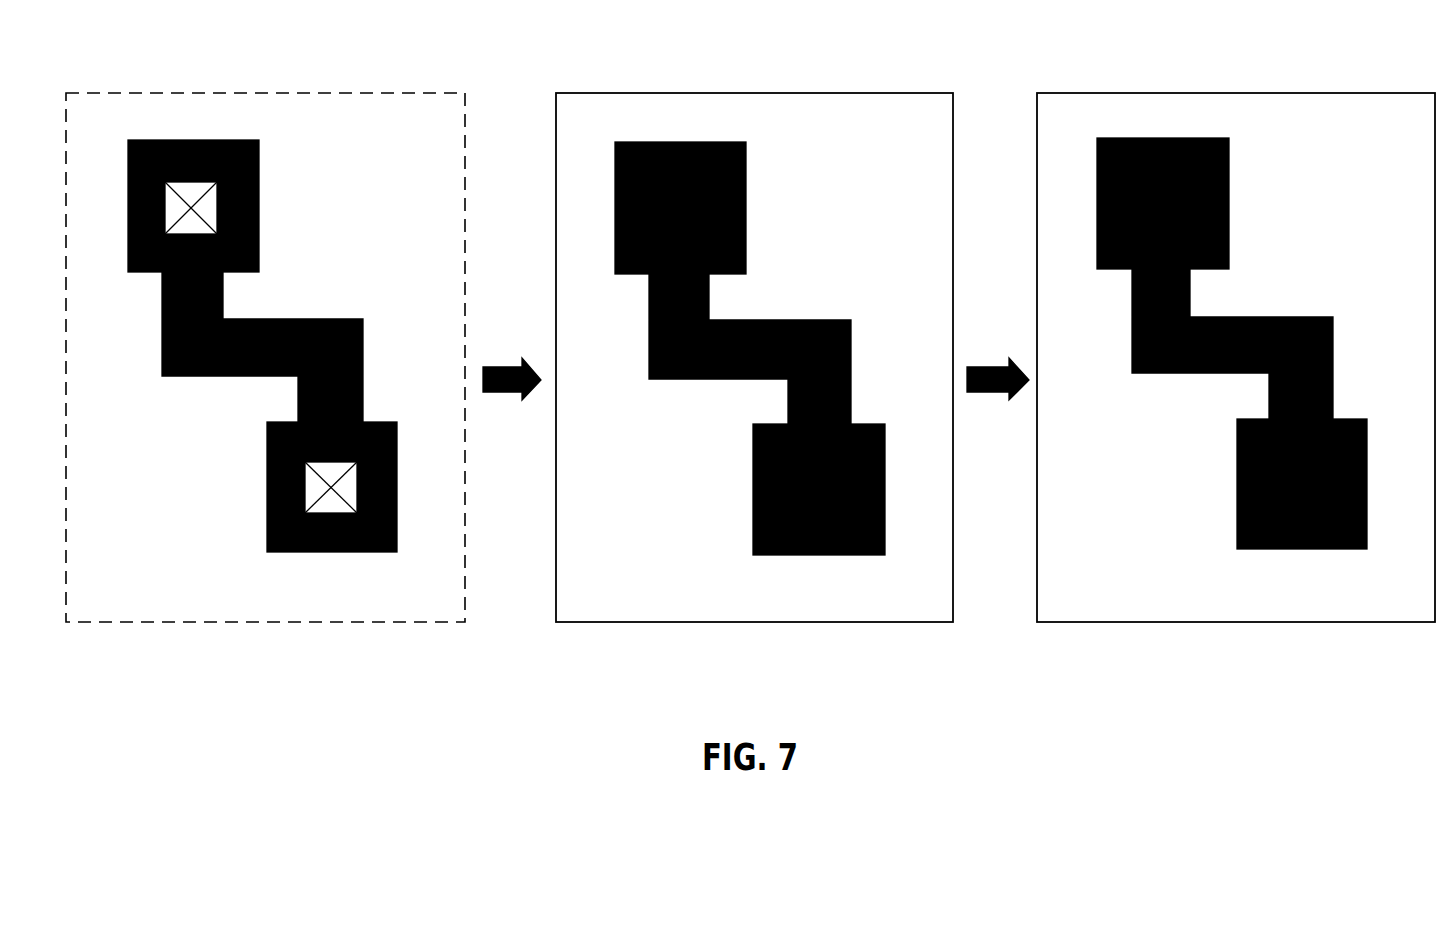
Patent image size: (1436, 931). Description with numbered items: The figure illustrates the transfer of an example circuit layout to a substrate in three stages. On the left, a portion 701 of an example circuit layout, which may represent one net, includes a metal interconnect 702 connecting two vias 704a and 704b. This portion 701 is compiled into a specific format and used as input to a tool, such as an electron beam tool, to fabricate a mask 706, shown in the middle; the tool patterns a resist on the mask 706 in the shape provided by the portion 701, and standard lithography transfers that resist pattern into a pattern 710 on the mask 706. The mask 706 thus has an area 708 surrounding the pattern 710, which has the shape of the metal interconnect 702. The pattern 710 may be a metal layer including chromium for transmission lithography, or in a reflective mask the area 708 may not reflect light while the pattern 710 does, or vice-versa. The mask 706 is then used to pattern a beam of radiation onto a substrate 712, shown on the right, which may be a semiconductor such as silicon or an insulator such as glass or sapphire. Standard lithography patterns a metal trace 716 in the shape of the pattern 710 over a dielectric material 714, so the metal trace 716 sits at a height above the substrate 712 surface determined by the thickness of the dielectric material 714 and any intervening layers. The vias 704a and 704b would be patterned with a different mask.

The portion of circuit layout 701 is at (293, 92).
The metal interconnect 702 is at (303, 319).
The via 704a is at (258, 188).
The via 704b is at (267, 512).
The mask 706 is at (850, 93).
The area 708 is at (853, 183).
The pattern 710 is at (761, 324).
The substrate 712 is at (1237, 93).
The dielectric material 714 is at (1370, 178).
The metal trace 716 is at (1269, 318).